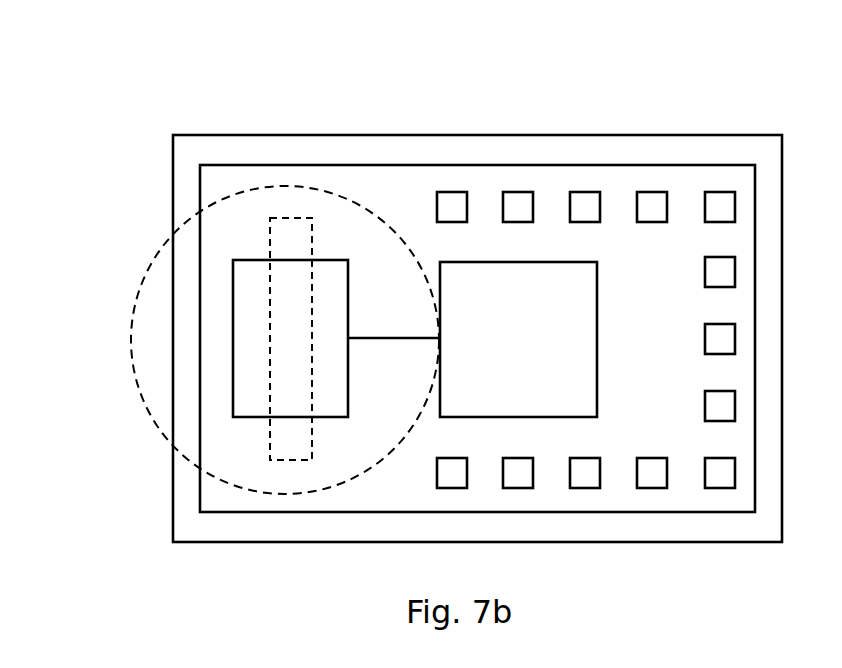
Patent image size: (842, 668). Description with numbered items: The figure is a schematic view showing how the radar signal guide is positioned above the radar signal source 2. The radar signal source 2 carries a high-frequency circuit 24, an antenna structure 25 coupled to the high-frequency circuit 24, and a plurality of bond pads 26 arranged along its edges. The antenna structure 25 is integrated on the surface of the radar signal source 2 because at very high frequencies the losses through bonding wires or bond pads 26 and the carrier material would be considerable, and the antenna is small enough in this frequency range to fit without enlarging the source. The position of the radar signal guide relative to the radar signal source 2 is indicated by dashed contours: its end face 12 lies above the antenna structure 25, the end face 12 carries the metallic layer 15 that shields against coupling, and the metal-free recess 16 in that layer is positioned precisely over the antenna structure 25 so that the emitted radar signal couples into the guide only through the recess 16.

The radar signal source 2 is at (300, 100).
The end face 12 is at (133, 323).
The metallic layer 15 is at (233, 237).
The metal-free recess 16 is at (277, 437).
The high-frequency circuit 24 is at (555, 407).
The antenna structure 25 is at (338, 298).
The bond pads 26 is at (650, 202).